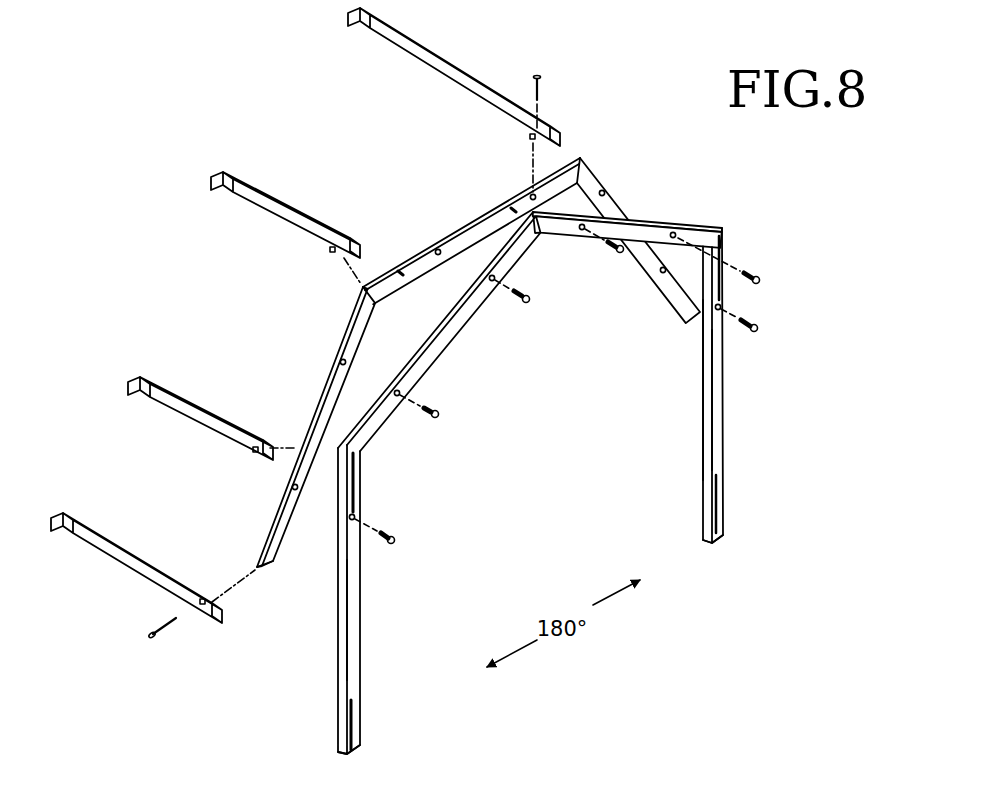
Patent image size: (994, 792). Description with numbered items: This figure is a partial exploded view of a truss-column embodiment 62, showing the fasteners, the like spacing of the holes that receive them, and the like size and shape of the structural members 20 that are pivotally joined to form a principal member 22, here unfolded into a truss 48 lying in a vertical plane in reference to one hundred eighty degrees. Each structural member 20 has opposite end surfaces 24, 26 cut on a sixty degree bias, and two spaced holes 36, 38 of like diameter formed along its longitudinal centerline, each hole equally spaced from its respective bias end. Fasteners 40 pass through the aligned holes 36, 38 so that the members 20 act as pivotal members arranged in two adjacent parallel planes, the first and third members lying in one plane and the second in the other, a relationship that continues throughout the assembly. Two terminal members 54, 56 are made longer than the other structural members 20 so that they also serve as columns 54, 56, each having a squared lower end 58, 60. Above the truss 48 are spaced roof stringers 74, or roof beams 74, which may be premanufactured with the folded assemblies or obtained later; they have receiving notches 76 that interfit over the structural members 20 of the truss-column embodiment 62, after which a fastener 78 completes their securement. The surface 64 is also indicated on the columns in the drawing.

The structural member 20 is at (477, 210).
The principal member 22 is at (597, 166).
The end surface 24 is at (361, 288).
The end surface 26 is at (365, 283).
The hole 36 is at (341, 359).
The hole 38 is at (293, 489).
The fastener 40 is at (531, 287).
The truss 48 is at (454, 227).
The column 54 is at (341, 592).
The column 56 is at (726, 394).
The squared lower end 58 is at (340, 752).
The squared lower end 60 is at (724, 536).
The truss-column embodiment 62 is at (702, 396).
The front surface 64 is at (339, 657).
The stringer 74 is at (460, 62).
The receiving notch 76 is at (530, 139).
The fastener 78 is at (541, 88).